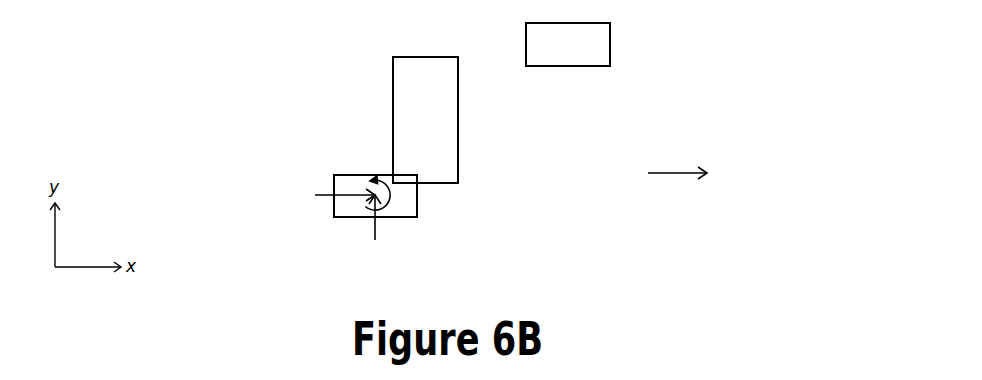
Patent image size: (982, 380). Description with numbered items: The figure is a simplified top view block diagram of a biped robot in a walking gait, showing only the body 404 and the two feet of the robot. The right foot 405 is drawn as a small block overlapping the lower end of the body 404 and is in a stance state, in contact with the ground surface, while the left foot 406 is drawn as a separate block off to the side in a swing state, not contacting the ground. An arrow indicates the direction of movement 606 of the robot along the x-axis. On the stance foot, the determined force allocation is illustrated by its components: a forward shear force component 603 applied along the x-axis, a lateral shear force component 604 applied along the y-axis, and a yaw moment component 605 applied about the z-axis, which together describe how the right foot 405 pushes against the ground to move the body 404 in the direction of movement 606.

The body 404 is at (392, 88).
The right foot 405 is at (418, 193).
The left foot 406 is at (589, 67).
The forward shear force component 603 is at (322, 198).
The lateral shear force component 604 is at (373, 229).
The yaw moment component 605 is at (378, 177).
The direction of movement 606 is at (680, 173).